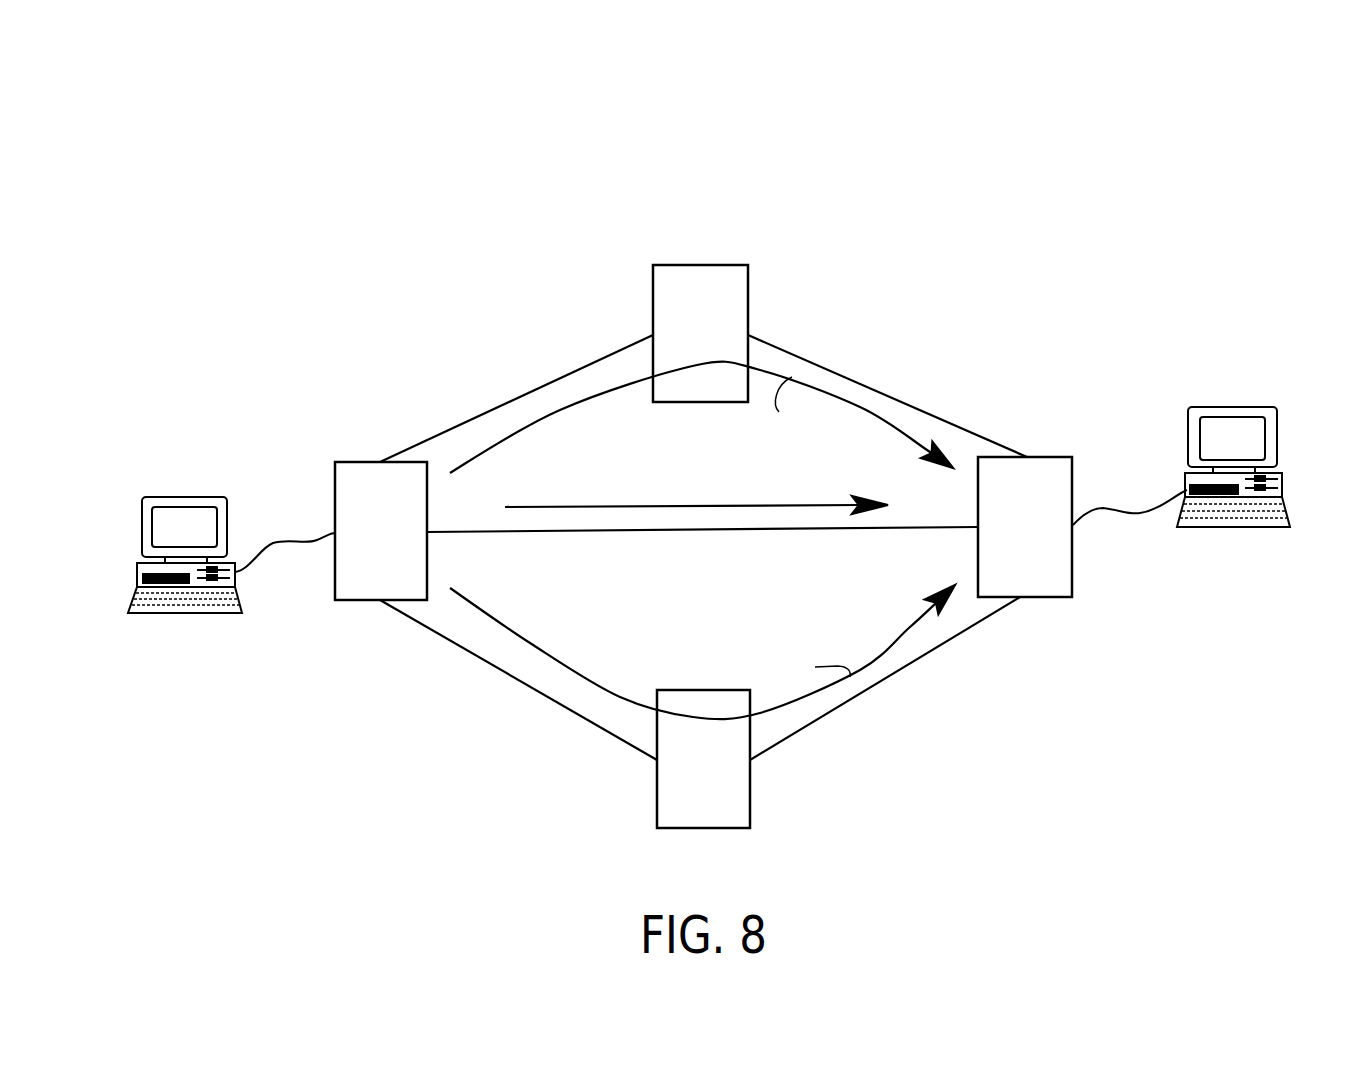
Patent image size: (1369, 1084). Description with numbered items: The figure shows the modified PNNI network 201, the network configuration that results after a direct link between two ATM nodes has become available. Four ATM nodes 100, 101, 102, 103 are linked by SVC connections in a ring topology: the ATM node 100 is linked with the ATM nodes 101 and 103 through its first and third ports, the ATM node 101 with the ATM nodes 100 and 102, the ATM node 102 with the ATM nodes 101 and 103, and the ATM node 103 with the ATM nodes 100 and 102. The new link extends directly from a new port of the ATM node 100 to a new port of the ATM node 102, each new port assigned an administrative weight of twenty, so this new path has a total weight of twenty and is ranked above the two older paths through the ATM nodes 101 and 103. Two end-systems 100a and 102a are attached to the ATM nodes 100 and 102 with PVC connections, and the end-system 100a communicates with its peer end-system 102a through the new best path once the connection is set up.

The modified PNNI network 201 is at (630, 173).
The ATM node 100 is at (334, 473).
The ATM node 101 is at (680, 265).
The ATM node 102 is at (1072, 480).
The ATM node 103 is at (697, 828).
The end-system 100a is at (158, 615).
The end-system 102a is at (1237, 525).